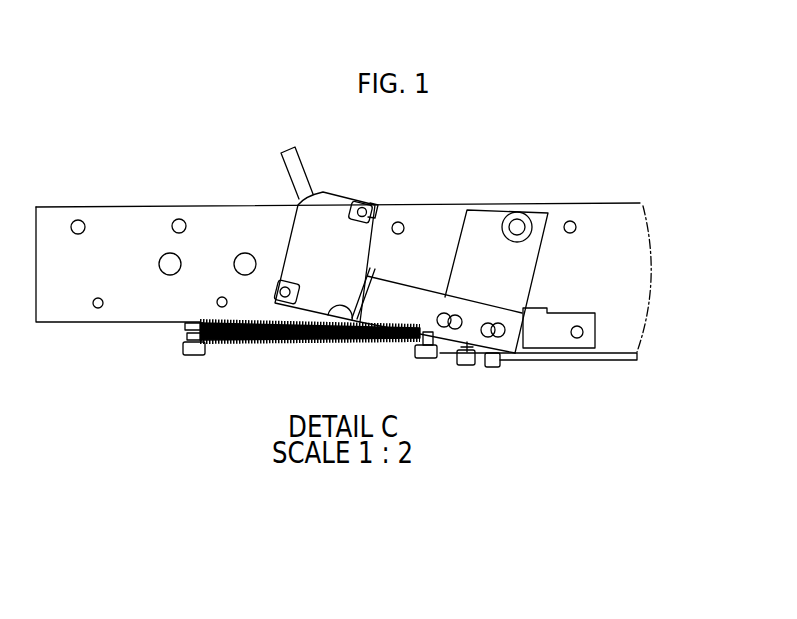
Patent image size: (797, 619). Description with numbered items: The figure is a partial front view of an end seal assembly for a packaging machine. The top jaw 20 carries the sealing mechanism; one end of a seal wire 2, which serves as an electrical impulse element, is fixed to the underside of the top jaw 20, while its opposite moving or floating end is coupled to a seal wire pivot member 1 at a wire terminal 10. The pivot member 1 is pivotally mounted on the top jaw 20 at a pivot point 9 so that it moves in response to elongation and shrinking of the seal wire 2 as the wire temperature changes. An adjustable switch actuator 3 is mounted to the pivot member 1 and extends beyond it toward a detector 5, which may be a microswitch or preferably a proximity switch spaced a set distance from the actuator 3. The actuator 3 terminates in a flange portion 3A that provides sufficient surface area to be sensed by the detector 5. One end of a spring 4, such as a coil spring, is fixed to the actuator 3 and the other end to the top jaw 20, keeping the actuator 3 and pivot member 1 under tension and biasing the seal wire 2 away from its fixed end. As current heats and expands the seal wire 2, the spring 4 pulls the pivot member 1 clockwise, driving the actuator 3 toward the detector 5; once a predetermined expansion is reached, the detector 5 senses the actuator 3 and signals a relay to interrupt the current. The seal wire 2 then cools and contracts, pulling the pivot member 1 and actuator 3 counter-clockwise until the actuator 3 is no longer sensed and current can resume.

The top jaw 20 is at (97, 200).
The detector 5 is at (317, 232).
The flange portion 3A is at (370, 270).
The adjustable switch actuator 3 is at (395, 305).
The seal wire pivot member 1 is at (517, 282).
The pivot point 9 is at (528, 207).
The spring 4 is at (272, 335).
The wire terminal 10 is at (465, 370).
The seal wire 2 is at (525, 373).